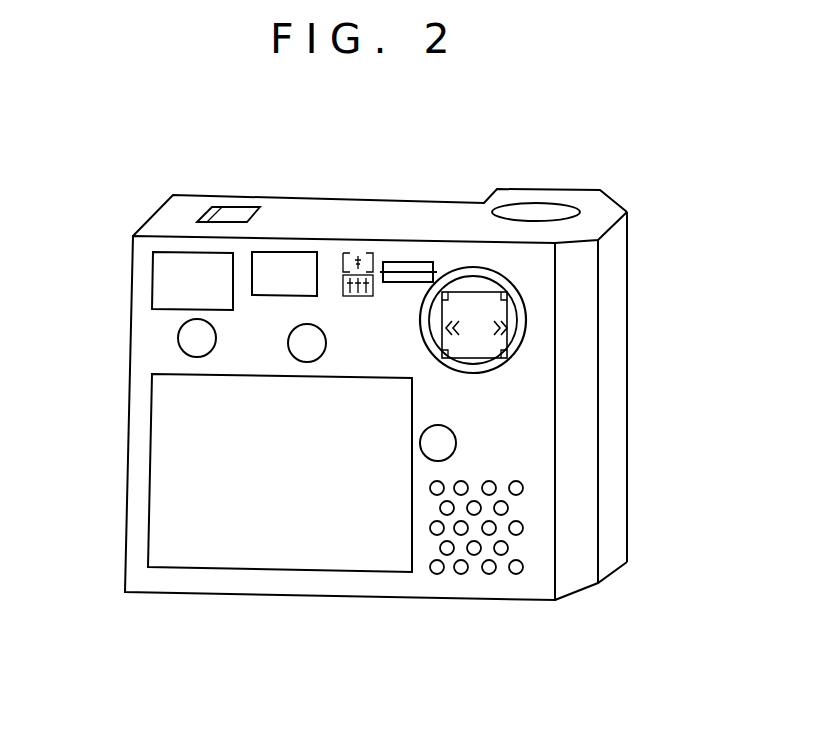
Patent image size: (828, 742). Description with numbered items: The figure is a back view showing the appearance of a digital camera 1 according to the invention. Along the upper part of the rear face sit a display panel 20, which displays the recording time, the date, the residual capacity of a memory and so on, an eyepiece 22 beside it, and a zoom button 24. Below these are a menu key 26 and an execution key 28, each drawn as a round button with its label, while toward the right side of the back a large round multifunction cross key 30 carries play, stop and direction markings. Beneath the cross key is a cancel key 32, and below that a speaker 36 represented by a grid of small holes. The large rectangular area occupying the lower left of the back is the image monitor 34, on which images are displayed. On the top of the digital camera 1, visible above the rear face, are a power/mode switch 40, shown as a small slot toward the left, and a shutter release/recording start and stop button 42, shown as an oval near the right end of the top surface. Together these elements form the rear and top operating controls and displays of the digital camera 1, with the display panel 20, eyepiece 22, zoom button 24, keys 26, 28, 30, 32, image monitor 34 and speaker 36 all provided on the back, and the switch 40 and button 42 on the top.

The digital camera 1 is at (648, 137).
The display panel 20 is at (175, 267).
The eyepiece 22 is at (303, 262).
The zoom button 24 is at (412, 270).
The menu key 26 is at (192, 336).
The execution key 28 is at (302, 350).
The multifunction cross key 30 is at (523, 355).
The cancel key 32 is at (443, 457).
The image monitor 34 is at (363, 530).
The speaker 36 is at (458, 577).
The power/mode switch 40 is at (240, 206).
The shutter release/recording start and stop button 42 is at (553, 212).